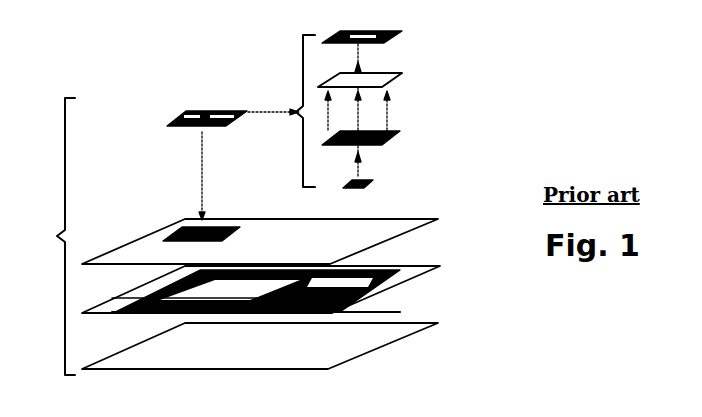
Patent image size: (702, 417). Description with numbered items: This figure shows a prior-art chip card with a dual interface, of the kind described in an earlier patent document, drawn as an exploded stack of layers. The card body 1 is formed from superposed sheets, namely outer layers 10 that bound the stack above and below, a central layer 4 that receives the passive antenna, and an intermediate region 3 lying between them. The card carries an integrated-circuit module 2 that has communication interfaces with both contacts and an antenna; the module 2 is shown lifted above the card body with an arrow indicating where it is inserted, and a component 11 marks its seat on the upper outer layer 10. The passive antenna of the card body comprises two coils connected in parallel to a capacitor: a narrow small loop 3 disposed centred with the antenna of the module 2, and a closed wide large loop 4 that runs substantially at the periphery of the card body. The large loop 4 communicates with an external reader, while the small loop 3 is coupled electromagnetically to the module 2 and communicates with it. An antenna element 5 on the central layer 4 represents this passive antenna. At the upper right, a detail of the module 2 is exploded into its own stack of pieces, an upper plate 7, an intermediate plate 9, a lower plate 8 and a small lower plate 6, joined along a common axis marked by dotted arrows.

The multilayer module stack 1 is at (59, 236).
The integrated-circuit module 2 is at (197, 110).
The small loop 3 is at (193, 296).
The large loop 4 is at (408, 265).
The embedded component 5 is at (393, 280).
The lower small plate 6 is at (370, 183).
The upper plate 7 is at (400, 36).
The lower plate 8 is at (398, 136).
The intermediate plate 9 is at (400, 82).
The outer plates 10 is at (397, 223).
The component on top plate 11 is at (180, 222).